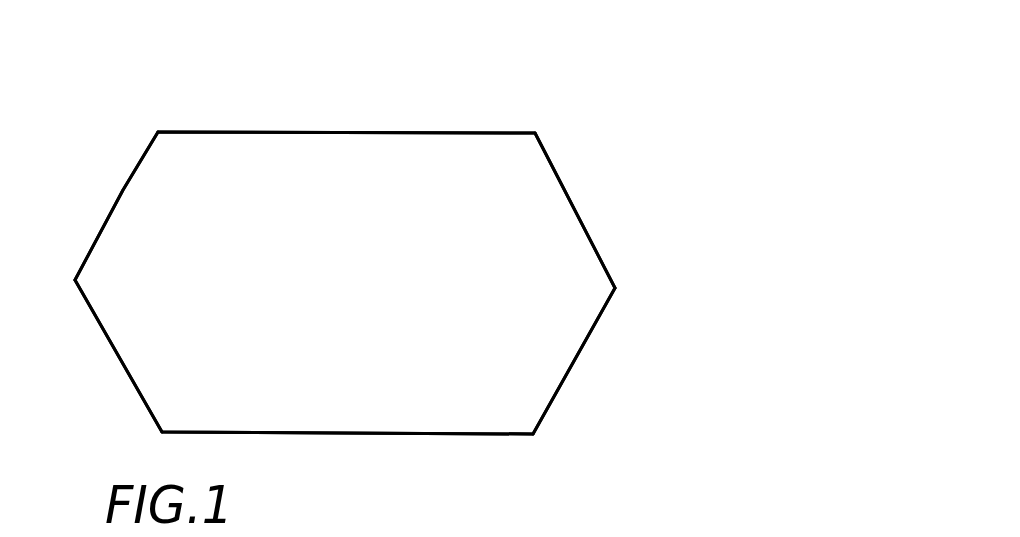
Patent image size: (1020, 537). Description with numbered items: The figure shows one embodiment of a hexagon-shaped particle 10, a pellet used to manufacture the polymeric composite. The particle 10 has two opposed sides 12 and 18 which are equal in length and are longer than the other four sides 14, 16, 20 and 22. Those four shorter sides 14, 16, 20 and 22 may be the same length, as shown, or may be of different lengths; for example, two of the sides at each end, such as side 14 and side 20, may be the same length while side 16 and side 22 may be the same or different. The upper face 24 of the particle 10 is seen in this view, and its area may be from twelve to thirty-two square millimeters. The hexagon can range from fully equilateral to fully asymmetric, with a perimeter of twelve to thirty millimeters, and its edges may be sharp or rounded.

The particle 10 is at (486, 74).
The opposed side 12 is at (370, 84).
The side 14 is at (574, 191).
The side 16 is at (572, 359).
The opposed side 18 is at (364, 434).
The side 20 is at (125, 377).
The side 22 is at (124, 186).
The upper face 24 is at (400, 274).